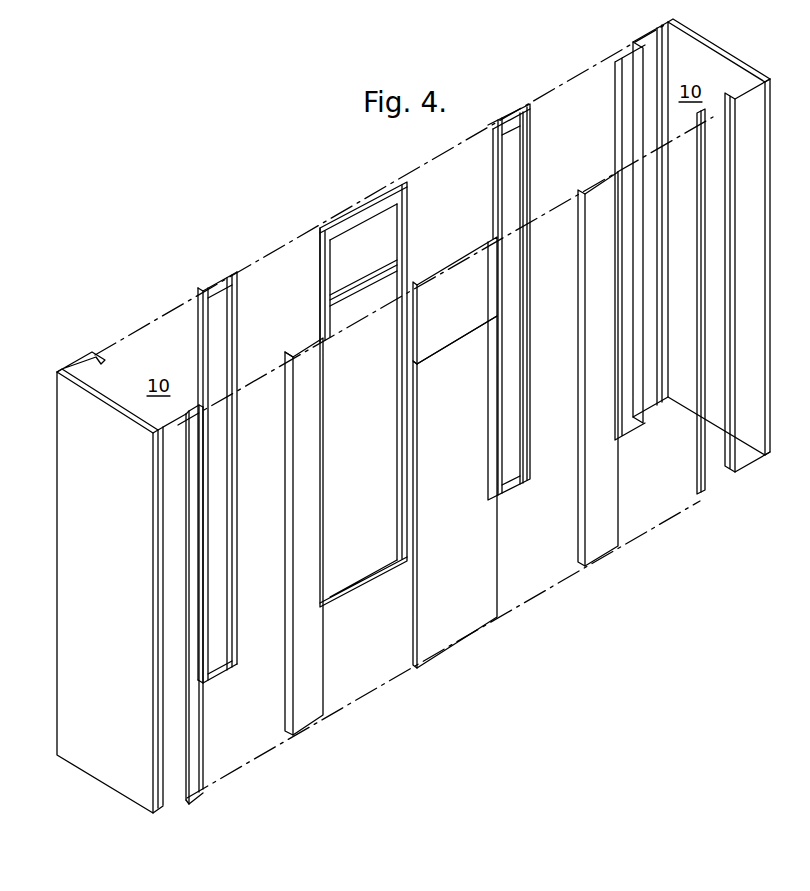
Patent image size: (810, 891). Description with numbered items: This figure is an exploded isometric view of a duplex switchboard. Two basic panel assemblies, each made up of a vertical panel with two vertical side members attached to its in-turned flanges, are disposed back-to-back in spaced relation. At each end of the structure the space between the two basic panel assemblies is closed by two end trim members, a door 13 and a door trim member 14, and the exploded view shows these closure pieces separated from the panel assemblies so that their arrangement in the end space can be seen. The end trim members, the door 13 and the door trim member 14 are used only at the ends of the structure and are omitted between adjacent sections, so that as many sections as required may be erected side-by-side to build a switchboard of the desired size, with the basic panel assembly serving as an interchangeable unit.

The door 13 is at (460, 632).
The door trim member 14 is at (468, 258).